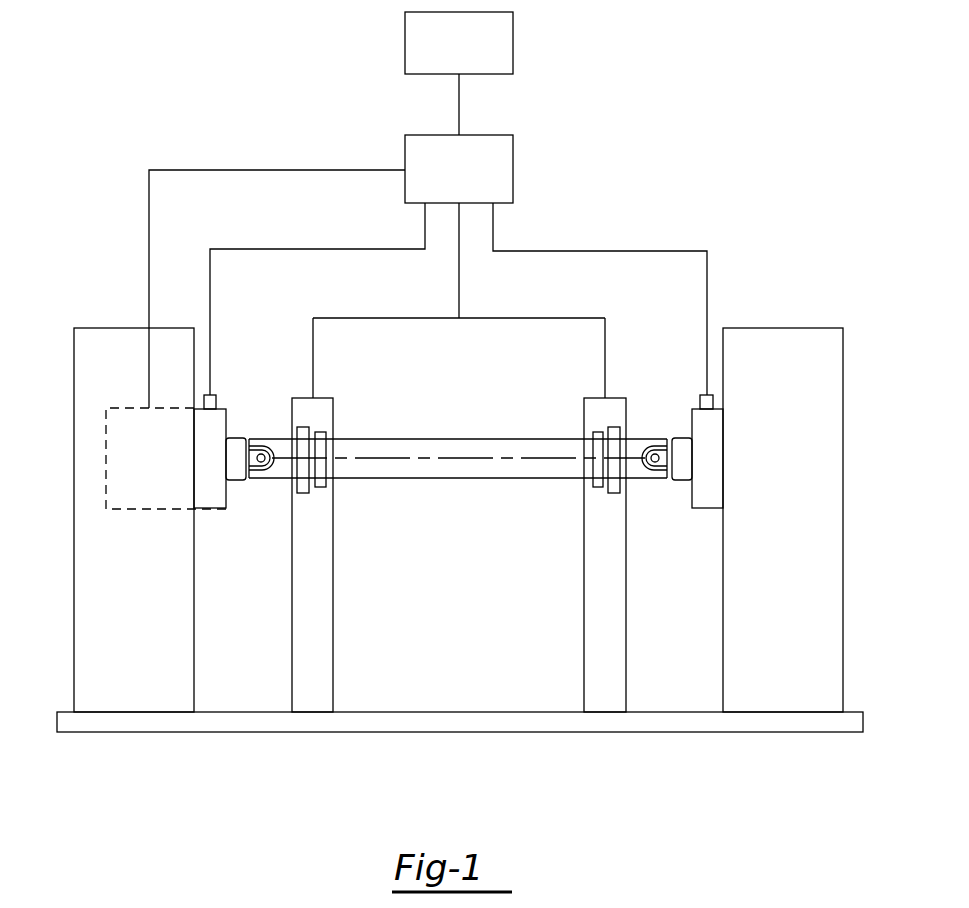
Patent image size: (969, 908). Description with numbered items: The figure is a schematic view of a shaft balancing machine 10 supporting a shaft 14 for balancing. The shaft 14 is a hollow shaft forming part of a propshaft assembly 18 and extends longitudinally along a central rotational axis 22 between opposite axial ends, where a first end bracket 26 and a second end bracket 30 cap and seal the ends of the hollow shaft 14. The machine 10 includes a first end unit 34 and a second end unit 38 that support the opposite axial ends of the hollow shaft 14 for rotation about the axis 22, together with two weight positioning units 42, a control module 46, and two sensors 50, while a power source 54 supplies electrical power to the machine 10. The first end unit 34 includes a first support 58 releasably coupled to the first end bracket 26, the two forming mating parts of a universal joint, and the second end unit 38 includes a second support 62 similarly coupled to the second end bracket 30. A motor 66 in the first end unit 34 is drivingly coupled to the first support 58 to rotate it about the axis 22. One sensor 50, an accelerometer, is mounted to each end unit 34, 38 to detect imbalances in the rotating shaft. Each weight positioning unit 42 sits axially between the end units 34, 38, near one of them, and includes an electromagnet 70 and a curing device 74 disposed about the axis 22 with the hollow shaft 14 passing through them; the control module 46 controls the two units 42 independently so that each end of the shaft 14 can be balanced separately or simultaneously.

The shaft balancing machine 10 is at (143, 71).
The hollow shaft 14 is at (403, 478).
The propshaft assembly 18 is at (424, 436).
The central rotational axis 22 is at (462, 458).
The first end bracket 26 is at (266, 483).
The second end bracket 30 is at (658, 483).
The first end unit 34 is at (72, 345).
The second end unit 38 is at (789, 326).
The weight positioning unit 42 is at (582, 649).
The control module 46 is at (513, 168).
The sensor 50 is at (216, 400).
The power source 54 is at (513, 43).
The first support 58 is at (233, 438).
The second support 62 is at (684, 438).
The motor 66 is at (150, 509).
The electromagnet 70 is at (303, 493).
The curing device 74 is at (320, 487).